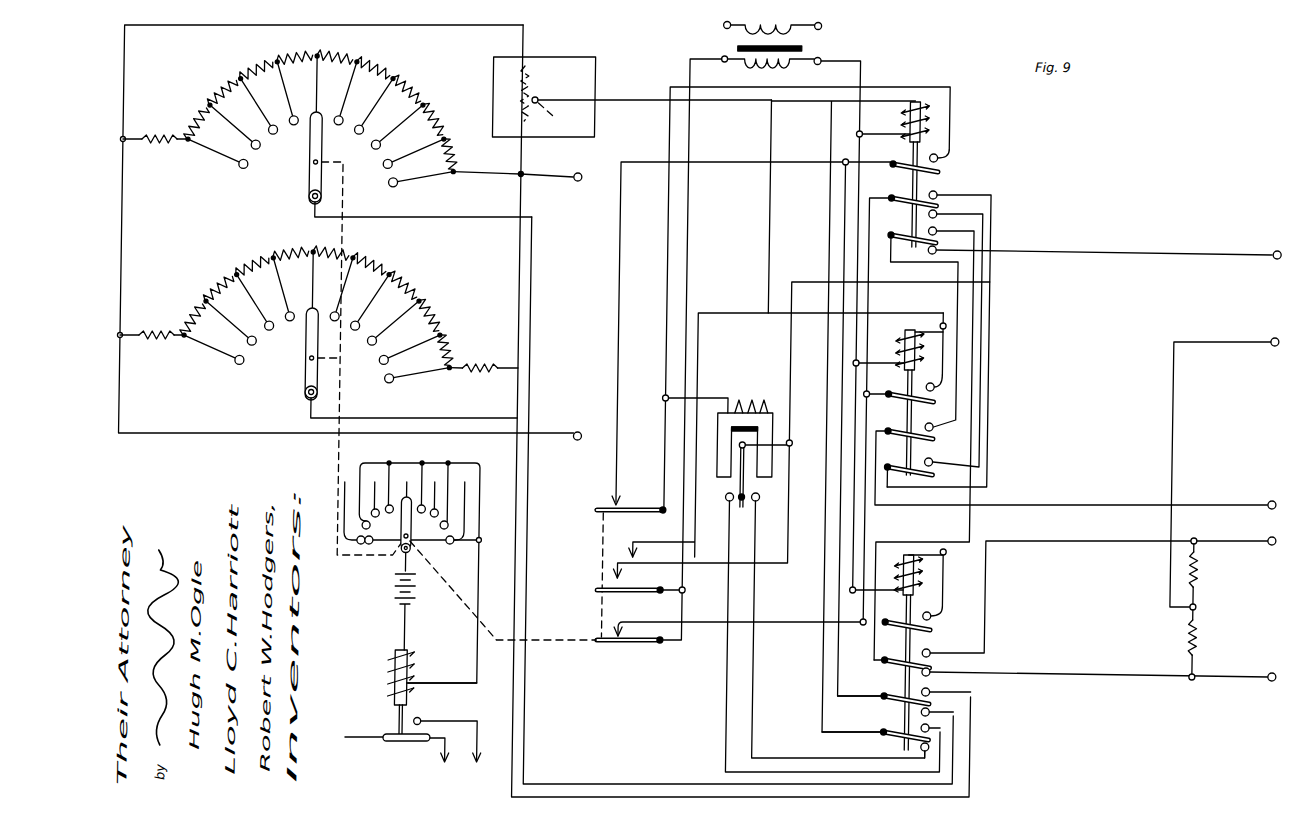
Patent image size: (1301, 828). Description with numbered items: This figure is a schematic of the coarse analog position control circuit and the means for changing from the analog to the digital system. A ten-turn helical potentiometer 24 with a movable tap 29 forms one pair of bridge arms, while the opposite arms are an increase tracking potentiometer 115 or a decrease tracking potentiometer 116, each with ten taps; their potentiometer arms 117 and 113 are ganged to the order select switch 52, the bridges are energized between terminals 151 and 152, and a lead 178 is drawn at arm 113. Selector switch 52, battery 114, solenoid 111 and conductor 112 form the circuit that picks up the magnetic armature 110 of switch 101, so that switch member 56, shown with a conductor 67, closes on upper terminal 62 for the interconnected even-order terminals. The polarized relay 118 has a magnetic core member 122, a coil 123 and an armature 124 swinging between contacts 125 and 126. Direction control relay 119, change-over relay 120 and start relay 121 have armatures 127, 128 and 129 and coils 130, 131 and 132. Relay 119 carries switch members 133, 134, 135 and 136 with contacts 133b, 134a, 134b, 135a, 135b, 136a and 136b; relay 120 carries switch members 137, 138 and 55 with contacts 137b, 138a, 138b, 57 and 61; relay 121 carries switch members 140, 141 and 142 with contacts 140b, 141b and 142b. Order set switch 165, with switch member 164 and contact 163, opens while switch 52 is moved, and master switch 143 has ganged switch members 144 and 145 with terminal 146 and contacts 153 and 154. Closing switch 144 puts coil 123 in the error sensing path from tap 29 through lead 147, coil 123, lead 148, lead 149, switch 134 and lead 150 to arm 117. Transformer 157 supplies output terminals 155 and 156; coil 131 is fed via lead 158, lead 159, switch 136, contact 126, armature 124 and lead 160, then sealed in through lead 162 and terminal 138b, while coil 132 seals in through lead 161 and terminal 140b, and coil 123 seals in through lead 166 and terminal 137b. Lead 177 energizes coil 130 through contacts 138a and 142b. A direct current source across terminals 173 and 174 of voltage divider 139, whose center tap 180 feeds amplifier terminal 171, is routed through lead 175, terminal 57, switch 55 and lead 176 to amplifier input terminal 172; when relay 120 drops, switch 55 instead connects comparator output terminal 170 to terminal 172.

The increase tracking potentiometer 115 is at (466, 73).
The decrease tracking potentiometer 116 is at (476, 300).
The potentiometer arm 117 is at (306, 178).
The potentiometer arm 113 is at (305, 376).
The conductor 178 is at (434, 418).
The terminal 151 is at (576, 173).
The terminal 152 is at (579, 431).
The helical potentiometer 24 is at (573, 80).
The movable tap 29 is at (556, 118).
The transformer 157 is at (818, 36).
The transformer output terminal 156 is at (718, 56).
The transformer output terminal 155 is at (817, 65).
The lead 158 is at (856, 72).
The lead 160 is at (685, 270).
The lead 166 is at (666, 355).
The lead 147 is at (767, 135).
The lead 159 is at (827, 187).
The lead 148 is at (618, 300).
The lead 149 is at (842, 223).
The lead 161 is at (814, 313).
The lead 162 is at (811, 282).
The lead 150 is at (619, 784).
The master switch 143 is at (590, 538).
The upper switch member 144 is at (640, 505).
The terminal 146 is at (612, 497).
The switch member 145 is at (610, 595).
The contact 154 is at (639, 577).
The terminal 153 is at (628, 592).
The order set switch 165 is at (601, 647).
The switch member 164 is at (631, 647).
The contact 163 is at (626, 631).
The balanced polarized relay 118 is at (752, 393).
The coil 123 is at (775, 410).
The magnetic core member 122 is at (718, 470).
The armature member 124 is at (748, 486).
The contact 125 is at (729, 504).
The contact 126 is at (759, 504).
The conductor 112 is at (463, 463).
The order select switch 52 is at (400, 550).
The battery 114 is at (398, 590).
The magnetic armature 110 is at (395, 676).
The actuating solenoid 111 is at (420, 660).
The switch 101 is at (384, 715).
The switch member 56 is at (400, 743).
The conductor 67 is at (363, 741).
The upper terminal 62 is at (428, 718).
The change-over relay 120 is at (950, 162).
The solenoid 131 is at (925, 112).
The armature 128 is at (918, 186).
The upper terminal 137b is at (950, 142).
The switch member 137 is at (889, 160).
The switch member 138 is at (888, 195).
The upper terminal 138b is at (960, 193).
The contact 138a is at (960, 212).
The switch member 55 is at (888, 232).
The upper terminal 57 is at (936, 230).
The lower contact 61 is at (936, 248).
The comparator output terminal 170 is at (1275, 251).
The lead 176 is at (956, 300).
The start relay 121 is at (940, 455).
The solenoid 132 is at (925, 340).
The armature 129 is at (918, 412).
The upper terminal 140b is at (950, 383).
The switch member 140 is at (888, 391).
The switch member 141 is at (888, 428).
The upper terminal 141b is at (934, 431).
The switch member 142 is at (888, 464).
The contact 142b is at (950, 468).
The amplifier supply terminal 171 is at (1274, 338).
The amplifier input terminal 172 is at (1273, 501).
The lead 175 is at (972, 518).
The direction control relay 119 is at (935, 624).
The coil 130 is at (925, 570).
The armature 127 is at (920, 602).
The contact 133b is at (950, 614).
The switch member 133 is at (885, 627).
The lead 177 is at (855, 604).
The fixed contact 135b is at (934, 650).
The switch member 135 is at (885, 660).
The lower terminal 135a is at (936, 668).
The switch member 134 is at (886, 693).
The upper contact 134b is at (940, 688).
The lower contact 134a is at (938, 710).
The switch member 136 is at (886, 729).
The fixed contact 136b is at (938, 730).
The lower terminal 136a is at (926, 749).
The voltage divider 139 is at (1236, 608).
The center tap 180 is at (1190, 615).
The supply terminal 173 is at (1274, 545).
The negative supply terminal 174 is at (1276, 673).